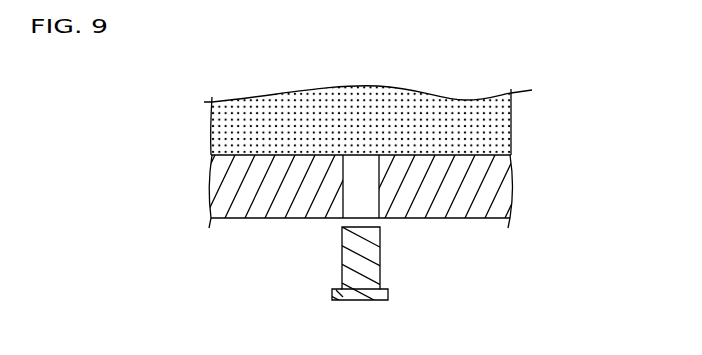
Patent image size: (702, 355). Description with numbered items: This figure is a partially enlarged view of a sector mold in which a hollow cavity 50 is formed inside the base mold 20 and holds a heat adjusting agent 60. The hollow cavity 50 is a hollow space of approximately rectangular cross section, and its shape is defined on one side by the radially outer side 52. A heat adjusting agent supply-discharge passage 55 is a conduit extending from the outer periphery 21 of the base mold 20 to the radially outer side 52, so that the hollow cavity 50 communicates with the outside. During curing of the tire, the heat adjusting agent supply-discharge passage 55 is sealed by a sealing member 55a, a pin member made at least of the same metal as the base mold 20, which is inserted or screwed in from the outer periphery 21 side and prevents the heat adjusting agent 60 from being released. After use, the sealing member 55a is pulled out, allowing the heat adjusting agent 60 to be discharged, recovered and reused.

The base mold 20 is at (512, 187).
The outer periphery 21 is at (272, 218).
The hollow cavity 50 is at (512, 124).
The radially outer side 52 is at (428, 155).
The heat adjusting agent supply-discharge passage 55 is at (360, 187).
The sealing member 55a is at (363, 286).
The heat adjusting agent 60 is at (375, 117).